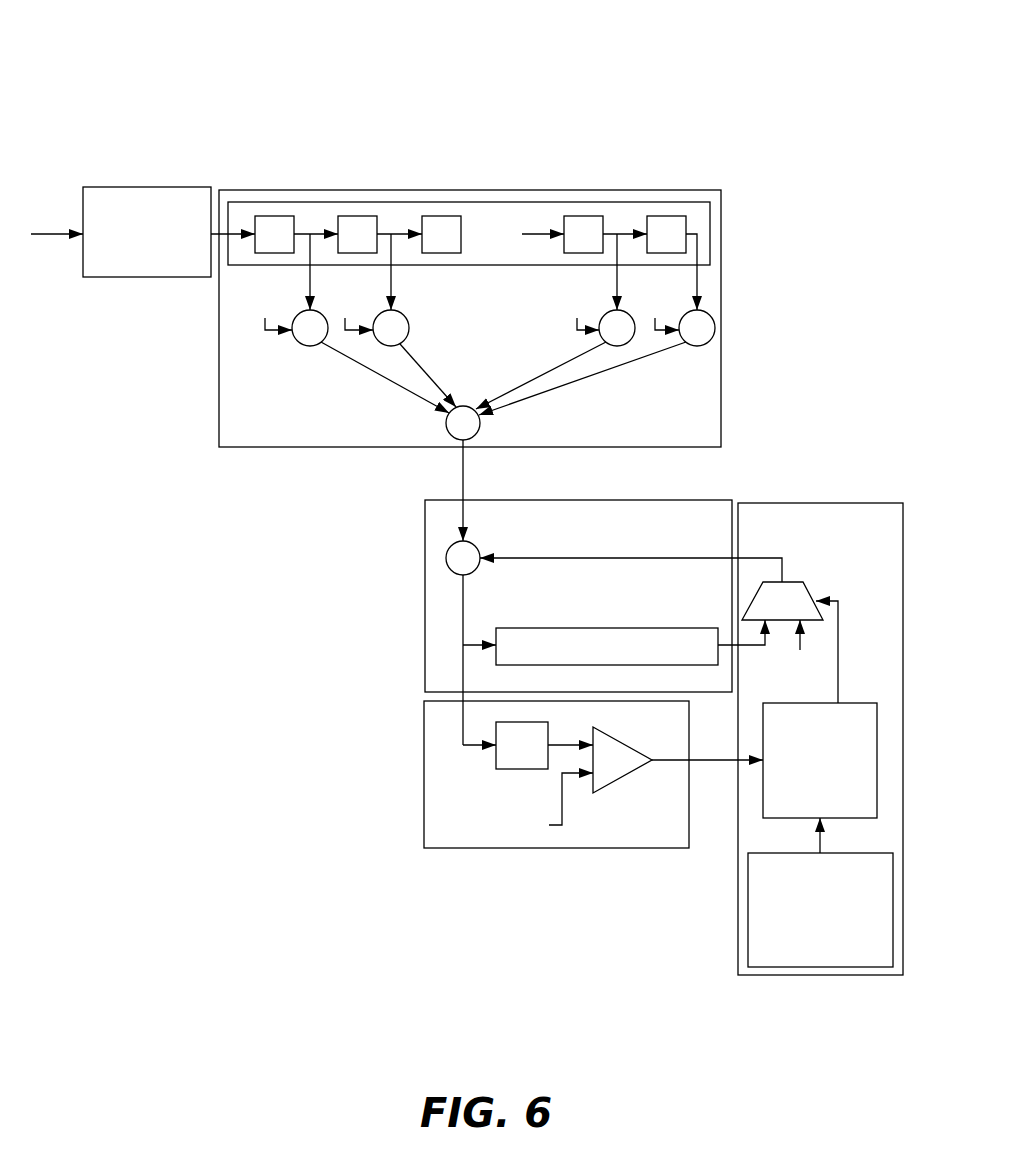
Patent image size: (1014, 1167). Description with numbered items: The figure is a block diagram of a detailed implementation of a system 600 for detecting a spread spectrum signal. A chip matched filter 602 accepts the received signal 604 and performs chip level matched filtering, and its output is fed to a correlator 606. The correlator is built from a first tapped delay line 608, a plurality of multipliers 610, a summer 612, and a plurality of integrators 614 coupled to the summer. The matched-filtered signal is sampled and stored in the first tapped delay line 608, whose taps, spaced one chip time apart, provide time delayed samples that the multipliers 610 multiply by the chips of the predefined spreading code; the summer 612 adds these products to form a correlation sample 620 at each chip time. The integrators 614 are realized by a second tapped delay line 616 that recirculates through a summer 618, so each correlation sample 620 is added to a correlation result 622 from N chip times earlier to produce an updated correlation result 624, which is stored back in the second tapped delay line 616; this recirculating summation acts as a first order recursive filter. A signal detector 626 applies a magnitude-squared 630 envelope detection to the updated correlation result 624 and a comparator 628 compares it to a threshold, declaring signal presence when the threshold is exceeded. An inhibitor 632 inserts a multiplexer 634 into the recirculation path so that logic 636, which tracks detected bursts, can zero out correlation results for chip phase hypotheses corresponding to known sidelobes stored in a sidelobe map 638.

The system 600 is at (86, 64).
The chip matched filter 602 is at (180, 187).
The received signal 604 is at (48, 238).
The correlator 606 is at (385, 189).
The first tapped delay line 608 is at (712, 237).
The multipliers 610 is at (716, 330).
The summer 612 is at (448, 436).
The integrators 614 is at (718, 500).
The second tapped delay line 616 is at (640, 628).
The summer 618 is at (447, 564).
The correlation sample 620 is at (463, 481).
The correlation result 622 is at (632, 558).
The updated correlation result 624 is at (463, 612).
The signal detector 626 is at (424, 730).
The comparator 628 is at (629, 775).
The magnitude-squared 630 is at (508, 775).
The inhibitor 632 is at (845, 500).
The multiplexer 634 is at (797, 580).
The logic 636 is at (763, 800).
The sidelobe map 638 is at (748, 910).